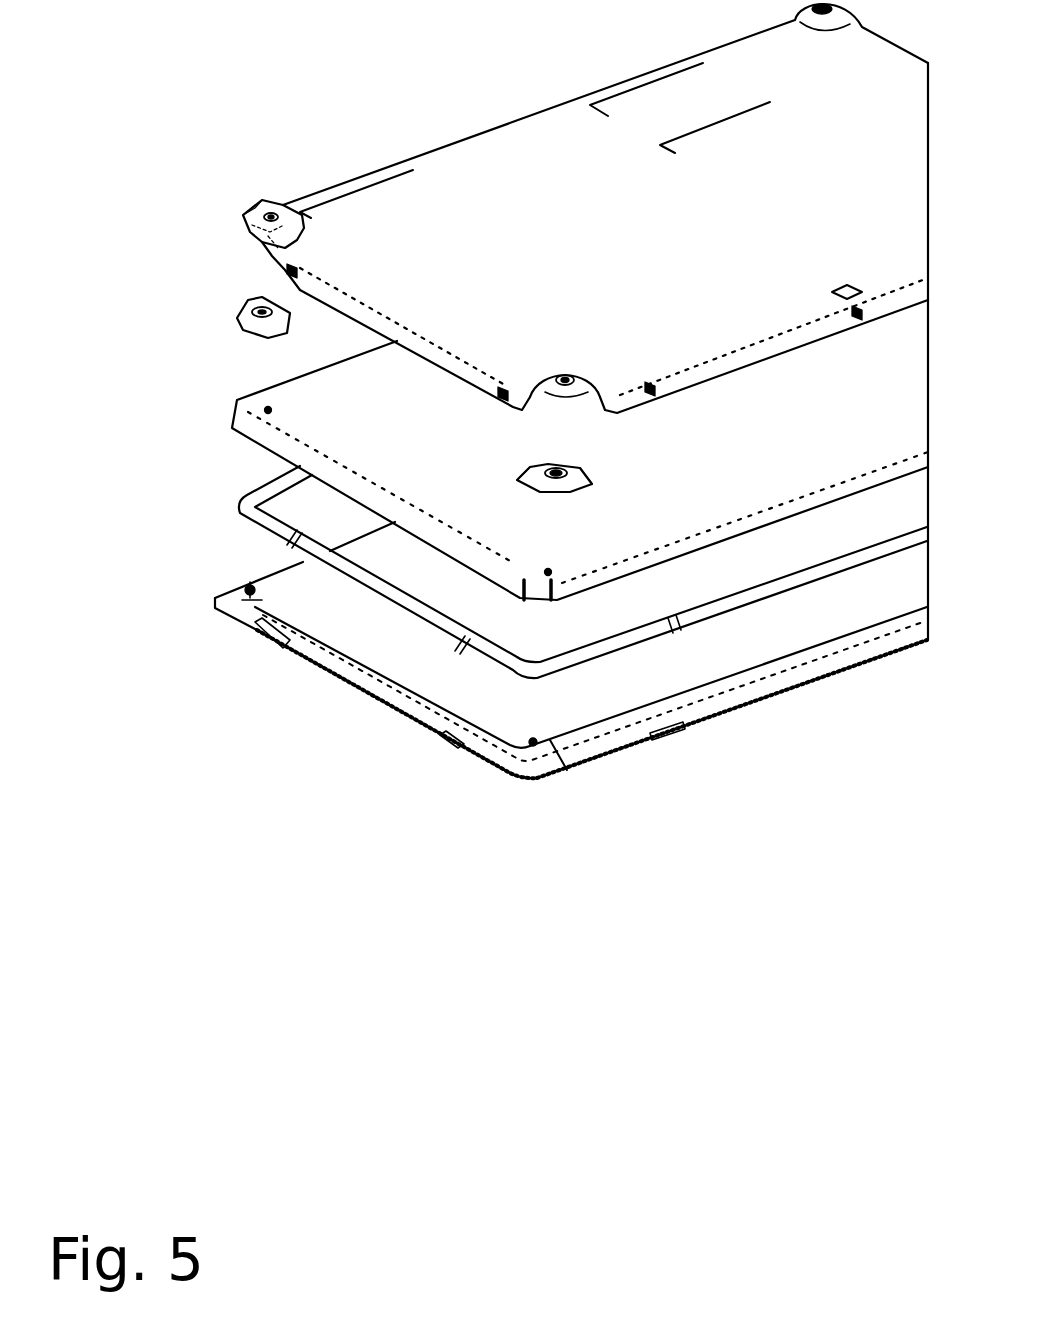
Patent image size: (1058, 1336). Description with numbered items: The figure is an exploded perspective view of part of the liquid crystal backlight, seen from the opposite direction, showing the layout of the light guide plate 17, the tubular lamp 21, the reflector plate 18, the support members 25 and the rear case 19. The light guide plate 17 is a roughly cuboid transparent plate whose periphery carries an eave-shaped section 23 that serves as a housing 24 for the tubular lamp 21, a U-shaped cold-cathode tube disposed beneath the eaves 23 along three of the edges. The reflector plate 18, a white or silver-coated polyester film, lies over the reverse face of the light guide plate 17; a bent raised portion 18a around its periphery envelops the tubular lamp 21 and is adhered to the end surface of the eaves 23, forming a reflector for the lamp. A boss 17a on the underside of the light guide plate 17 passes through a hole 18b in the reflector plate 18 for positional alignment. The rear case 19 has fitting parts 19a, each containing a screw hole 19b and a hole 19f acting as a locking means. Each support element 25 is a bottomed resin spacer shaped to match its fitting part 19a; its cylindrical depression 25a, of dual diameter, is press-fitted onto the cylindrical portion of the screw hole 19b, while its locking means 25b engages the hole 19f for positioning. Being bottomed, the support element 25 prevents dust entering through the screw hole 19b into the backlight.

The light guide plate 17 is at (252, 622).
The boss 17a is at (250, 590).
The reflector plate 18 is at (347, 403).
The raised portion 18a is at (460, 553).
The hole 18b is at (268, 410).
The rear case 19 is at (567, 122).
The fitting part 19a is at (262, 196).
The screw hole 19b is at (245, 216).
The hole 19f is at (262, 214).
The tubular lamp 21 is at (243, 510).
The eave-shaped section 23 is at (393, 708).
The housing 24 is at (732, 702).
The support element 25 is at (240, 320).
The cylindrical depression 25a is at (578, 464).
The locking means 25b is at (527, 470).